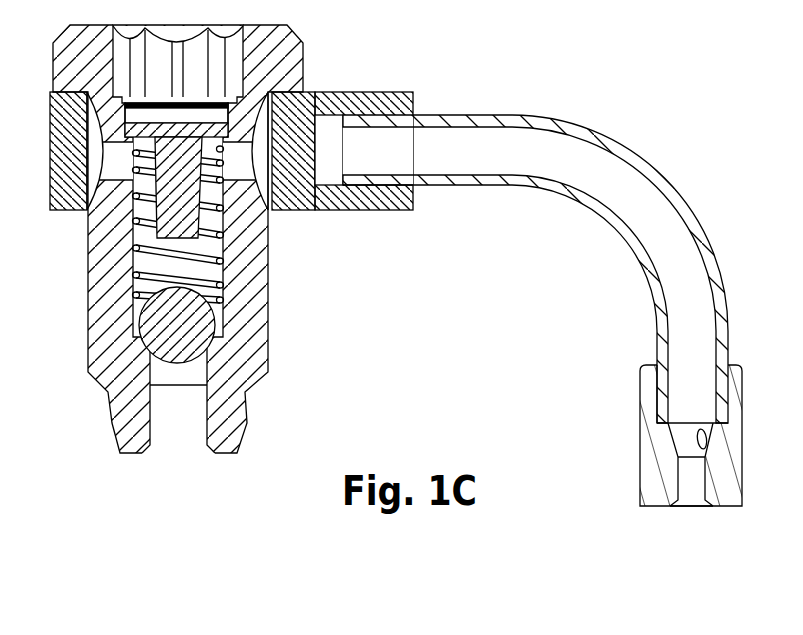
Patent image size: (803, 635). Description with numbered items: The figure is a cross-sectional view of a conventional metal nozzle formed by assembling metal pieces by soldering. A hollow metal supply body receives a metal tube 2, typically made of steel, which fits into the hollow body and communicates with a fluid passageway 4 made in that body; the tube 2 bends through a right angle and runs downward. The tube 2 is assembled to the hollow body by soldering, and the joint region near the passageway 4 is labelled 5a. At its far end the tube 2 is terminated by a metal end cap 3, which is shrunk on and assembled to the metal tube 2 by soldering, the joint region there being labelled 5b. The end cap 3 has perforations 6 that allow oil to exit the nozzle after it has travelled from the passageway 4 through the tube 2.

The metal tube 2 is at (658, 188).
The metal end cap 3 is at (723, 460).
The fluid passageway 4 is at (328, 140).
The first welded joint 5a is at (366, 193).
The second welded joint 5b is at (648, 392).
The perforations 6 is at (697, 441).